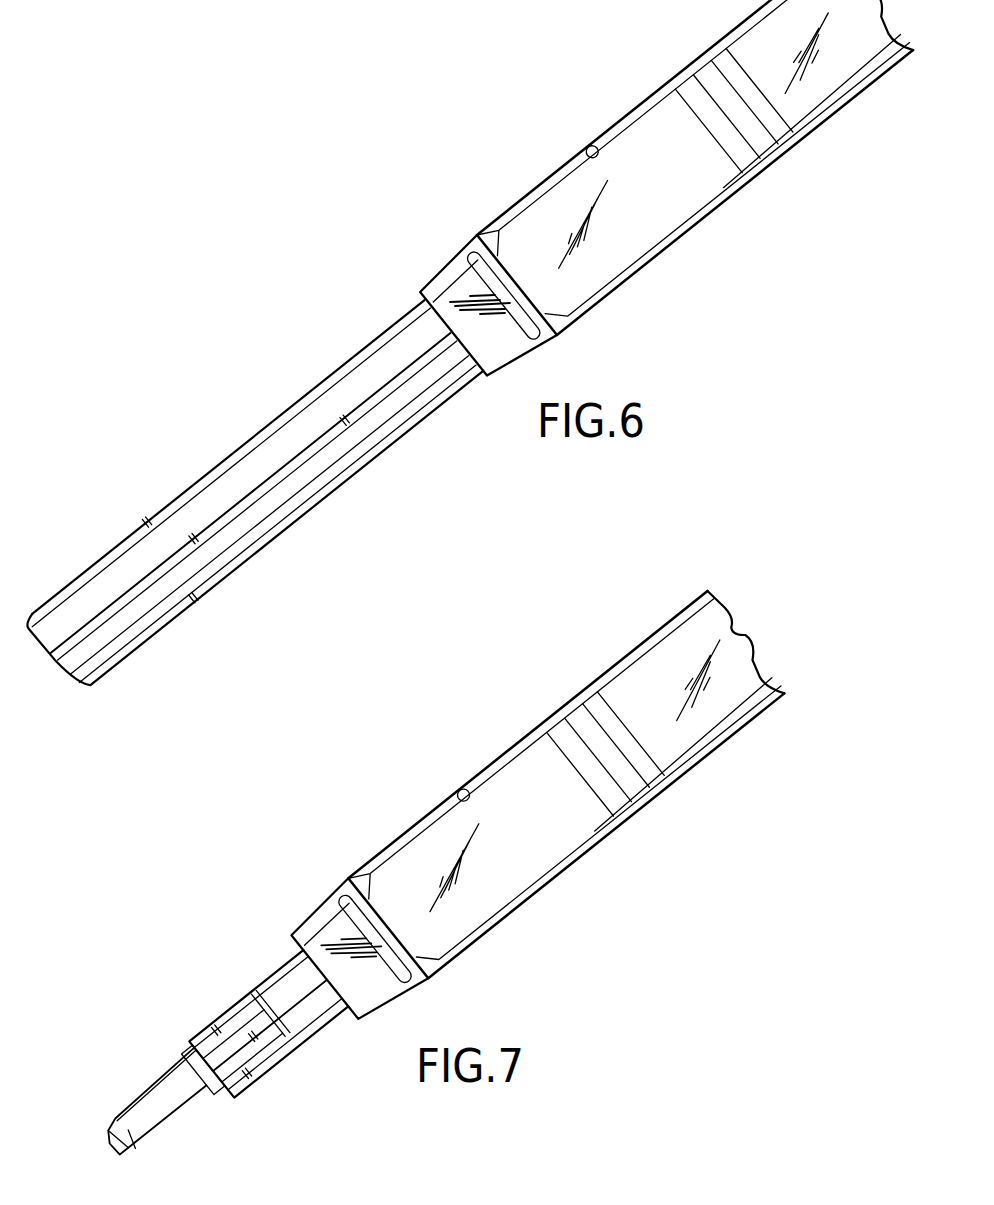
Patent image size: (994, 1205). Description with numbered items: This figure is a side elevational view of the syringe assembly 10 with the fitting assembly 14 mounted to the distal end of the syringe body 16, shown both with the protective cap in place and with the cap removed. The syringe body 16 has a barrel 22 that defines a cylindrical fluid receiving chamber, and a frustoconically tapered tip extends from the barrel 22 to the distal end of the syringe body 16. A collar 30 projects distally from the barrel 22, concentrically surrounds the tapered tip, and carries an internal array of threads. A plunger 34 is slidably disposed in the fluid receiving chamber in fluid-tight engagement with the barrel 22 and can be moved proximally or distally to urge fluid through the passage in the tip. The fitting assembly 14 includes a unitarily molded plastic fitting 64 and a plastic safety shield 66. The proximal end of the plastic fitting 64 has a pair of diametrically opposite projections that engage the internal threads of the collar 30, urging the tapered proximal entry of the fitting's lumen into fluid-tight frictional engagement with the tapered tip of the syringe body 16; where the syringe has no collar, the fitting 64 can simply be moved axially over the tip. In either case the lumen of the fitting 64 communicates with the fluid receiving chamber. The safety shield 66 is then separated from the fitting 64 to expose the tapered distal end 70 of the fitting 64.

In FIG. 6, the syringe assembly 10 is at (836, 171).
In FIG. 7, the syringe assembly 10 is at (708, 814).
In FIG. 6, the fitting assembly 14 is at (244, 578).
In FIG. 6, the syringe body 16 is at (632, 293).
In FIG. 7, the syringe body 16 is at (504, 936).
In FIG. 6, the barrel 22 is at (590, 155).
In FIG. 7, the barrel 22 is at (462, 798).
In FIG. 6, the collar 30 is at (452, 266).
In FIG. 7, the collar 30 is at (324, 909).
In FIG. 6, the plunger 34 is at (699, 63).
In FIG. 7, the plunger 34 is at (571, 706).
In FIG. 7, the plastic fitting 64 is at (216, 993).
In FIG. 6, the plastic safety shield 66 is at (178, 495).
In FIG. 7, the distal end 70 is at (110, 1144).